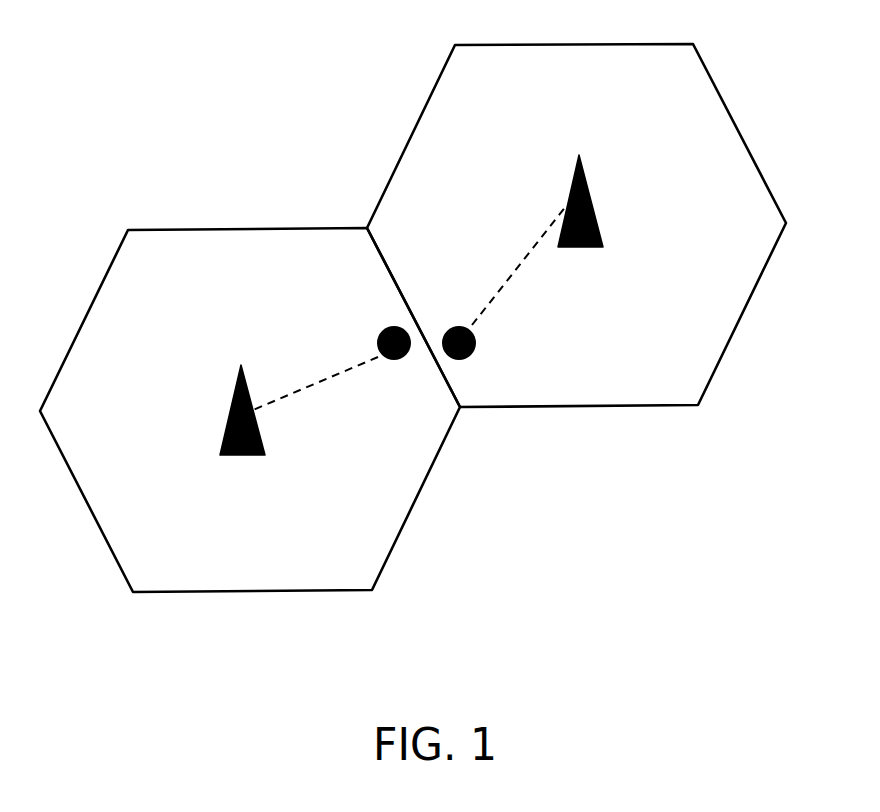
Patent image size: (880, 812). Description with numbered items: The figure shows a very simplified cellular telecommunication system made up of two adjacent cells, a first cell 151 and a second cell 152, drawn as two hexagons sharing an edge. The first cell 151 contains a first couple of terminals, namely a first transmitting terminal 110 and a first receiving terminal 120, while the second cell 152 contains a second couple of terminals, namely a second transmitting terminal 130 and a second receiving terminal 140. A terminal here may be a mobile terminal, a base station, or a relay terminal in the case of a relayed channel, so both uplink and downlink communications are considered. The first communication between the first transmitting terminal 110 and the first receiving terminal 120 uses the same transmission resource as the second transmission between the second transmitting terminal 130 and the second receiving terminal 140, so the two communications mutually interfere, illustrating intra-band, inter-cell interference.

The first transmitting terminal 110 is at (588, 180).
The first receiving terminal 120 is at (468, 357).
The second transmitting terminal 130 is at (227, 418).
The second receiving terminal 140 is at (381, 335).
The first cell 151 is at (712, 75).
The second cell 152 is at (155, 592).